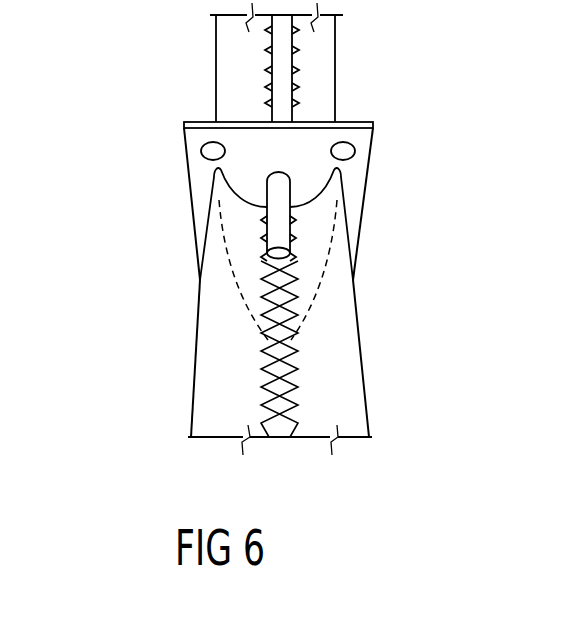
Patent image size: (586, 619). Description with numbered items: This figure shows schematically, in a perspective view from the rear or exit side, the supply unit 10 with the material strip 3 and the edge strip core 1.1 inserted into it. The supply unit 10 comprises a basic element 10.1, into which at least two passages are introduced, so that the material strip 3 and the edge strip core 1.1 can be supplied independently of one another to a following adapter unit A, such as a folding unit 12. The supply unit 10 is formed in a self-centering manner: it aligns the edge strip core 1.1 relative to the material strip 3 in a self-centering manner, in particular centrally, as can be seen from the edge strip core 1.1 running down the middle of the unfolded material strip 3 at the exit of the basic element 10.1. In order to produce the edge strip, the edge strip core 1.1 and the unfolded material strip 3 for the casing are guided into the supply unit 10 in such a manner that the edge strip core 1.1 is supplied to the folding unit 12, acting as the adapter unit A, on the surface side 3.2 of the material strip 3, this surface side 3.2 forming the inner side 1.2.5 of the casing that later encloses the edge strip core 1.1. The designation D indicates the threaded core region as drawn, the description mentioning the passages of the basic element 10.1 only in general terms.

The edge strip core 1.1 is at (280, 69).
The supply unit 10 is at (366, 128).
The basic element 10.1 is at (347, 195).
The inner side of the casing 1.2.5 is at (213, 292).
The material strip 3 is at (217, 375).
The surface side of the material strip 3.2 is at (352, 385).
The threaded spindle D is at (258, 362).
The folding unit 12 is at (322, 289).
The adapter unit A is at (338, 270).